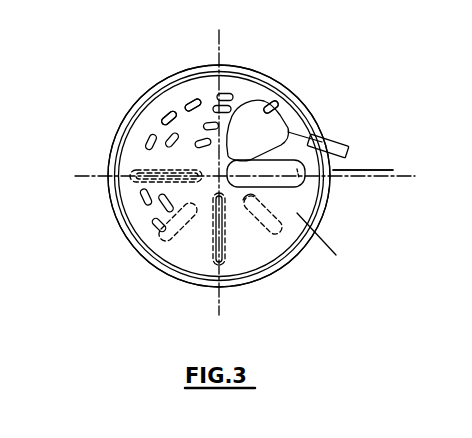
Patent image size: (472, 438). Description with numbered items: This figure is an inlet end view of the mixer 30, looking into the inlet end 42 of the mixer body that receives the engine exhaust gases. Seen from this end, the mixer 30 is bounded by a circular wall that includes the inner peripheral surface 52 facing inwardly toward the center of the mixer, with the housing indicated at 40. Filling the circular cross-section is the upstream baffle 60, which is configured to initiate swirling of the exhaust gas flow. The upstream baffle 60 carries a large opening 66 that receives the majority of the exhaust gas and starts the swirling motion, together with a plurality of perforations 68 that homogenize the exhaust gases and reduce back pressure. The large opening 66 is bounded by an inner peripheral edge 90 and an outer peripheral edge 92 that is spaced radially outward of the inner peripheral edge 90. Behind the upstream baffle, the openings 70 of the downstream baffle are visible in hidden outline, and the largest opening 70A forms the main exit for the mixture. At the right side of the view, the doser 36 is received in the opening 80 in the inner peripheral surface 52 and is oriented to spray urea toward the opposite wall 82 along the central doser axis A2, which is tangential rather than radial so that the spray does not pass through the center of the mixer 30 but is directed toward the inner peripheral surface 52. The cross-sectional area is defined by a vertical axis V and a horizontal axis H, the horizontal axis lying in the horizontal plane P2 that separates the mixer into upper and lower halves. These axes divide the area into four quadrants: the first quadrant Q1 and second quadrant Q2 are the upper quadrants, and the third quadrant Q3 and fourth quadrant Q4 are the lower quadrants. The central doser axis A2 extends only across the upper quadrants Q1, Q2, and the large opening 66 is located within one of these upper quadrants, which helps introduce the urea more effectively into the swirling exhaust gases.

The mixer 30 is at (108, 108).
The doser 36 is at (340, 143).
The housing outer wall 40 is at (157, 94).
The inlet end 42 is at (185, 247).
The inner peripheral surface 52 is at (322, 216).
The upstream baffle 60 is at (256, 246).
The large opening 66 is at (260, 110).
The perforations 68 is at (172, 112).
The openings 70 is at (166, 176).
The largest opening 70A is at (316, 183).
The opening 80 is at (393, 170).
The opposite wall 82 is at (163, 97).
The inner peripheral edge 90 is at (236, 137).
The outer peripheral edge 92 is at (279, 110).
The central doser axis A2 is at (358, 158).
The horizontal axis H is at (88, 176).
The vertical axis V is at (219, 312).
The horizontal plane P2 is at (332, 239).
The first quadrant Q1 is at (152, 123).
The second quadrant Q2 is at (254, 94).
The third quadrant Q3 is at (137, 253).
The fourth quadrant Q4 is at (303, 253).